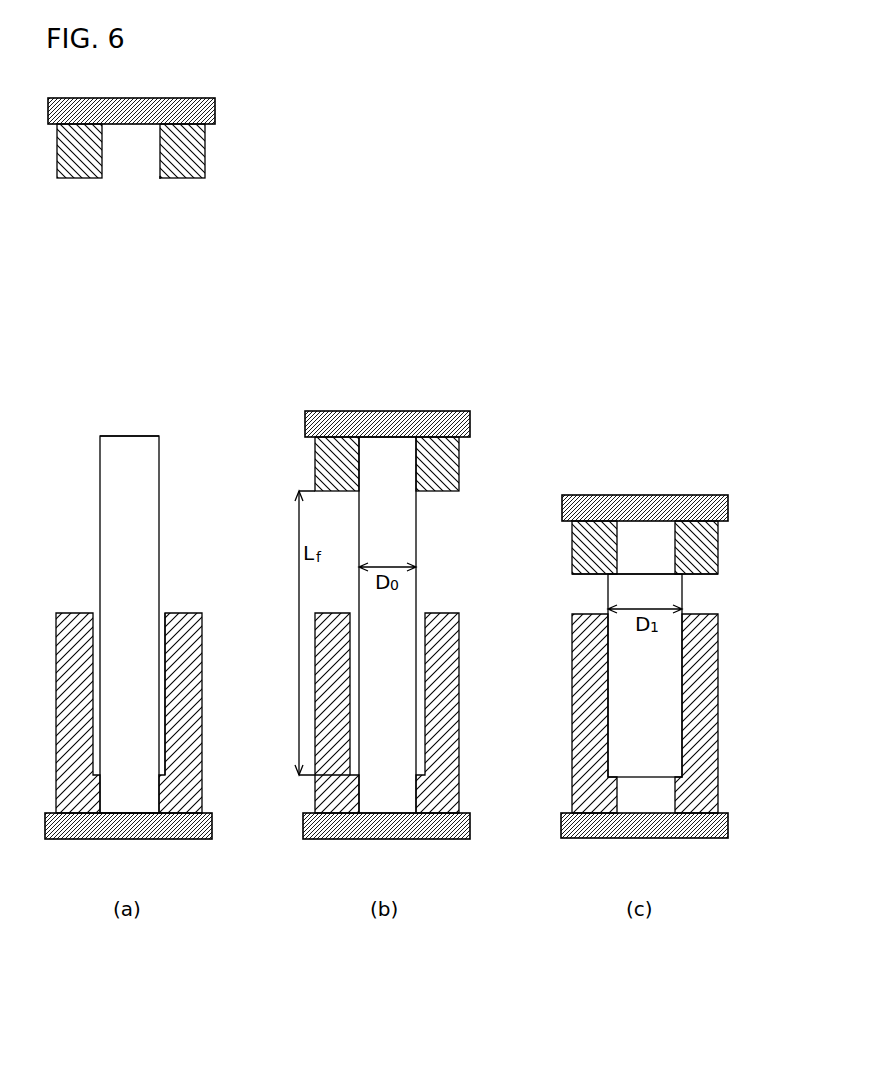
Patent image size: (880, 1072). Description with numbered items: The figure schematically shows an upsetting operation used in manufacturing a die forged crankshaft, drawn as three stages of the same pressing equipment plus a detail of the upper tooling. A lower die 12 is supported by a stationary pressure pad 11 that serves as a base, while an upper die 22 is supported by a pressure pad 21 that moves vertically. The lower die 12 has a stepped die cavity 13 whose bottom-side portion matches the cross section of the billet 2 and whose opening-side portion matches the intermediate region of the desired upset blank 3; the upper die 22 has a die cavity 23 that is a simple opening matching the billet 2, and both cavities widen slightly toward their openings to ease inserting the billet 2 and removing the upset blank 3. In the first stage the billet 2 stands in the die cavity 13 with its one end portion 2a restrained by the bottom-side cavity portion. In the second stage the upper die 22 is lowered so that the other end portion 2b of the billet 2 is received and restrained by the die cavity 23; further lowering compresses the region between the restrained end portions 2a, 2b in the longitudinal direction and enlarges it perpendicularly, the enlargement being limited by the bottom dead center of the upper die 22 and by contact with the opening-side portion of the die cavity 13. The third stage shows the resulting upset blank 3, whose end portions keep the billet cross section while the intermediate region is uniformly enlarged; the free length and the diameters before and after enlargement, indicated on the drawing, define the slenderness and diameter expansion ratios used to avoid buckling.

The pressure pad 21 is at (208, 99).
The upper die 22 is at (205, 150).
The die cavity 23 is at (160, 178).
The billet 2 is at (162, 565).
The one end portion 2a is at (150, 790).
The other end portion 2b is at (150, 468).
The die cavity 13 is at (162, 613).
The lower die 12 is at (202, 690).
The stationary pressure pad 11 is at (205, 839).
The upset blank 3 is at (665, 590).